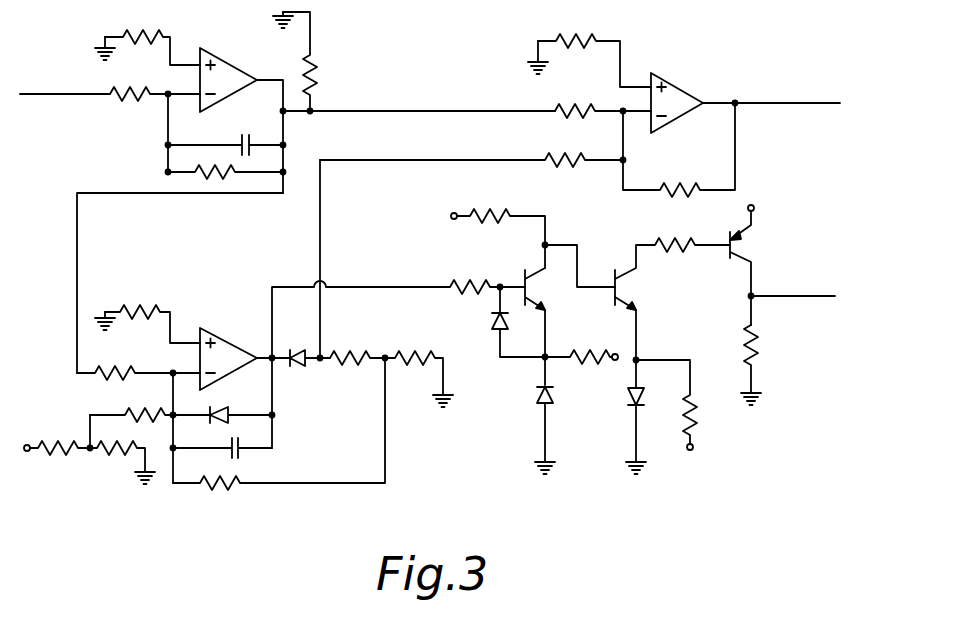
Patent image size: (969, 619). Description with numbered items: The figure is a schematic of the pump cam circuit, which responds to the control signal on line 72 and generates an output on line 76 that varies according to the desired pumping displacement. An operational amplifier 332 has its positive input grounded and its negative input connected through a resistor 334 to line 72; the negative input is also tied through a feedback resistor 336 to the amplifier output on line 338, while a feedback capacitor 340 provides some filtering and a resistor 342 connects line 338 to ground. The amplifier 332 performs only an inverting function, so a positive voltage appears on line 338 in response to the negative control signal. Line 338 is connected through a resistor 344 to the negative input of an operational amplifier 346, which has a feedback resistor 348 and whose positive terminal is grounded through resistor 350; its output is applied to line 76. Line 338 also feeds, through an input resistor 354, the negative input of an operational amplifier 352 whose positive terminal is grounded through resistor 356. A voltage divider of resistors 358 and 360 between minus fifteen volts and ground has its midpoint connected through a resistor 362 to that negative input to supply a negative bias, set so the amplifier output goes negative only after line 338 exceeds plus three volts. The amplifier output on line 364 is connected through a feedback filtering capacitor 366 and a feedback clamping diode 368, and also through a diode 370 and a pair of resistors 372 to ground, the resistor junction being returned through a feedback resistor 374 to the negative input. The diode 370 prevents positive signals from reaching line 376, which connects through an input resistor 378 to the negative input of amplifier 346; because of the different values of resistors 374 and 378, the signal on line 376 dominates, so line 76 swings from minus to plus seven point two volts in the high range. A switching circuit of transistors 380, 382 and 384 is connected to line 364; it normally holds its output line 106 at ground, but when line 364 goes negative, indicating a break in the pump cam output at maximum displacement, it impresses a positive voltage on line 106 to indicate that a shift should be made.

The line 72 is at (42, 77).
The resistor 334 is at (121, 100).
The operational amplifier 332 is at (222, 62).
The feedback capacitor 340 is at (248, 141).
The feedback resistor 336 is at (211, 176).
The resistor 342 is at (316, 76).
The line 338 is at (400, 111).
The resistor 344 is at (570, 118).
The resistor 350 is at (585, 39).
The operational amplifier 346 is at (680, 86).
The line 76 is at (787, 86).
The input resistor 378 is at (561, 166).
The feedback resistor 348 is at (673, 188).
The input resistor 354 is at (104, 368).
The resistor 356 is at (130, 310).
The operational amplifier 352 is at (224, 342).
The diode 370 is at (295, 367).
The pair of resistors 372 is at (400, 356).
The line 376 is at (322, 253).
The line 364 is at (358, 287).
The resistor 362 is at (139, 414).
The feedback clamping diode 368 is at (226, 404).
The resistor 358 is at (62, 455).
The resistor 360 is at (117, 455).
The feedback filtering capacitor 366 is at (246, 450).
The feedback resistor 374 is at (210, 487).
The transistor 380 is at (522, 282).
The transistor 382 is at (672, 356).
The transistor 384 is at (745, 249).
The output line 106 is at (793, 299).